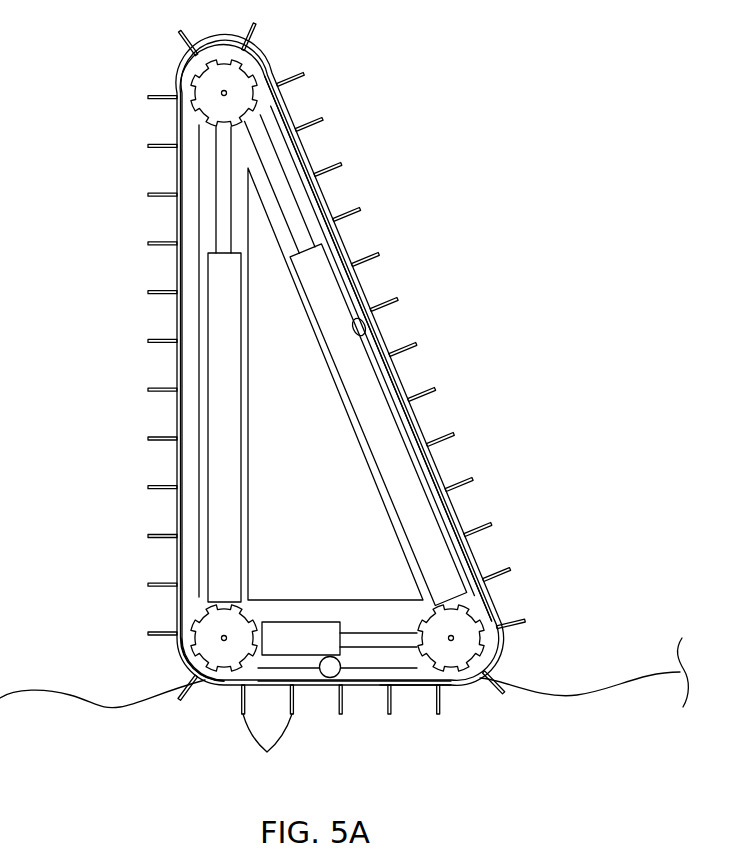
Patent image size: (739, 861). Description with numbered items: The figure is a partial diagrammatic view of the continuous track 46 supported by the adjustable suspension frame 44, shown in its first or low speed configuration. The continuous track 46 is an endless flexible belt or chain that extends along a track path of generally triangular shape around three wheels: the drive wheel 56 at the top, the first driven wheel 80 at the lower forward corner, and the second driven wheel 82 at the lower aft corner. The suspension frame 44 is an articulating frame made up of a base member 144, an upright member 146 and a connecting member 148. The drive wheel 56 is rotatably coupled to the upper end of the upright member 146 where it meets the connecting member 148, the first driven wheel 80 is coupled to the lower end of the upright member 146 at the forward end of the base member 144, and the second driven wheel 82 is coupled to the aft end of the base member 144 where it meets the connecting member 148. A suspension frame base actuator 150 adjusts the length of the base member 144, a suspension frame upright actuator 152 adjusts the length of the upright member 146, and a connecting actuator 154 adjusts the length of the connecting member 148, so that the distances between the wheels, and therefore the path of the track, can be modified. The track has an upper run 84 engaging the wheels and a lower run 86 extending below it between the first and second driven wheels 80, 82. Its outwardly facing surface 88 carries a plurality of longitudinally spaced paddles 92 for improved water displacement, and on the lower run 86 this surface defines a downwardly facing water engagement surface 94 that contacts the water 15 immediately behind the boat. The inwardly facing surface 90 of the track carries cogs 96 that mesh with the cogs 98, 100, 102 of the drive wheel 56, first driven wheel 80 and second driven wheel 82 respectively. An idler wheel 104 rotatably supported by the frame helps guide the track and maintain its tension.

The water 15 is at (32, 690).
The suspension frame 44 is at (398, 658).
The continuous track 46 is at (362, 292).
The drive wheel 56 is at (224, 70).
The first driven wheel 80 is at (213, 643).
The second driven wheel 82 is at (467, 678).
The upper run 84 is at (291, 108).
The lower run 86 is at (415, 687).
The outwardly facing surface 88 is at (208, 685).
The inwardly facing surface 90 is at (366, 330).
The paddles 92 is at (267, 752).
The water engagement surface 94 is at (360, 693).
The cogs 96 is at (304, 150).
The cogs 98 is at (197, 82).
The cogs 100 is at (184, 627).
The cogs 102 is at (500, 624).
The idler wheel 104 is at (330, 657).
The base member 144 is at (300, 663).
The upright member 146 is at (204, 393).
The connecting member 148 is at (302, 198).
The suspension frame base actuator 150 is at (332, 628).
The suspension frame upright actuator 152 is at (218, 487).
The connecting actuator 154 is at (375, 391).